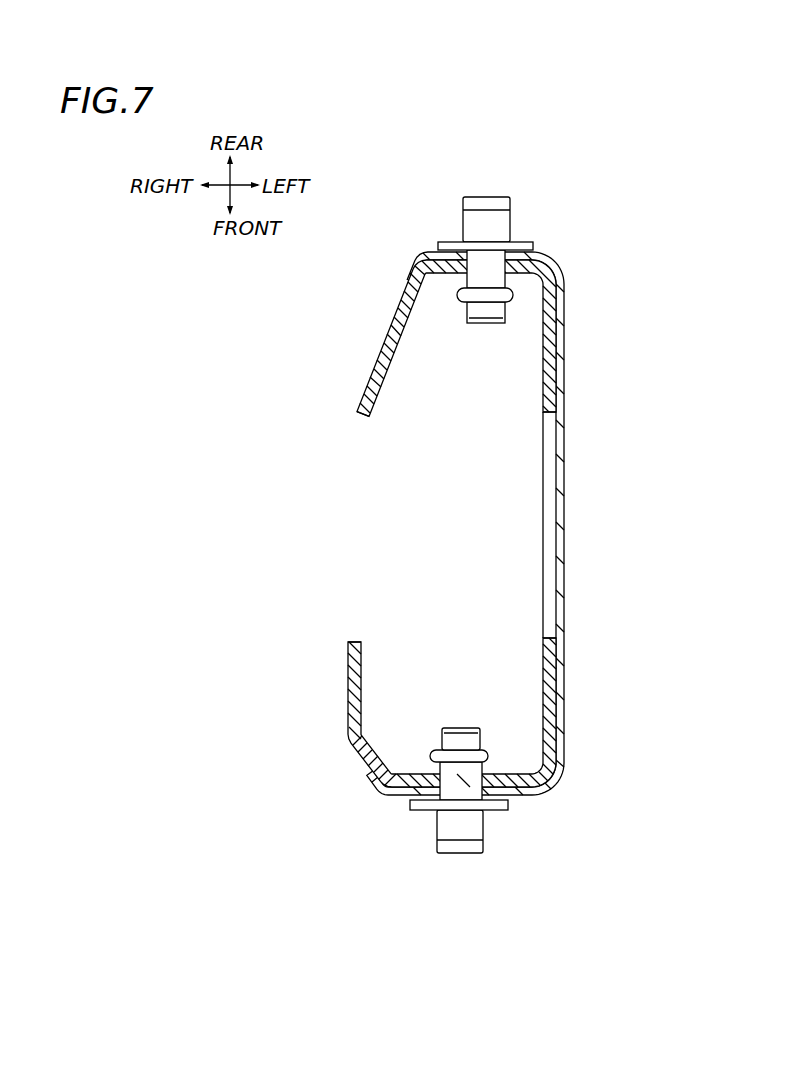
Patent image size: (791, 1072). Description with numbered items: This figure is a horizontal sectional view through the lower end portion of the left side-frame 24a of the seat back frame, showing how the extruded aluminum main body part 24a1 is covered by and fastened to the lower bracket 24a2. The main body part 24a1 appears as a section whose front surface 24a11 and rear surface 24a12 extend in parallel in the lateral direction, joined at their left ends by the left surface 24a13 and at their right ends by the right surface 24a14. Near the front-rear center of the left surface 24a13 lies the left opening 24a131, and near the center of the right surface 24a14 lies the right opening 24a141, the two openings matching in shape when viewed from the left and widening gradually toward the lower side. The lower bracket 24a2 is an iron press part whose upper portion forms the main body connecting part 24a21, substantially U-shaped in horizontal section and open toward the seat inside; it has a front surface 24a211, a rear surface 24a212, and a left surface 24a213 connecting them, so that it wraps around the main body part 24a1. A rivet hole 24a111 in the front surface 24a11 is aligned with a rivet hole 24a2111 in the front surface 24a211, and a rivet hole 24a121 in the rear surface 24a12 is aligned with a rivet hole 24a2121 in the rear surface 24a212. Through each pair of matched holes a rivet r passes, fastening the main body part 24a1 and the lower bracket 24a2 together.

The left side-frame 24a is at (479, 506).
The main body part 24a1 is at (385, 346).
The front surface 24a11 is at (421, 777).
The rivet hole 24a111 is at (437, 812).
The rear surface 24a12 is at (458, 270).
The rivet hole 24a121 is at (468, 280).
The left surface 24a13 is at (549, 362).
The left opening 24a131 is at (551, 414).
The right surface 24a14 is at (404, 316).
The right opening 24a141 is at (358, 414).
The lower bracket 24a2 is at (547, 506).
The main body connecting part 24a21 is at (567, 779).
The front surface 24a211 is at (515, 795).
The rivet hole 24a2111 is at (470, 803).
The rear surface 24a212 is at (545, 250).
The rivet hole 24a2121 is at (500, 241).
The left surface 24a213 is at (563, 547).
The rivet r is at (487, 196).